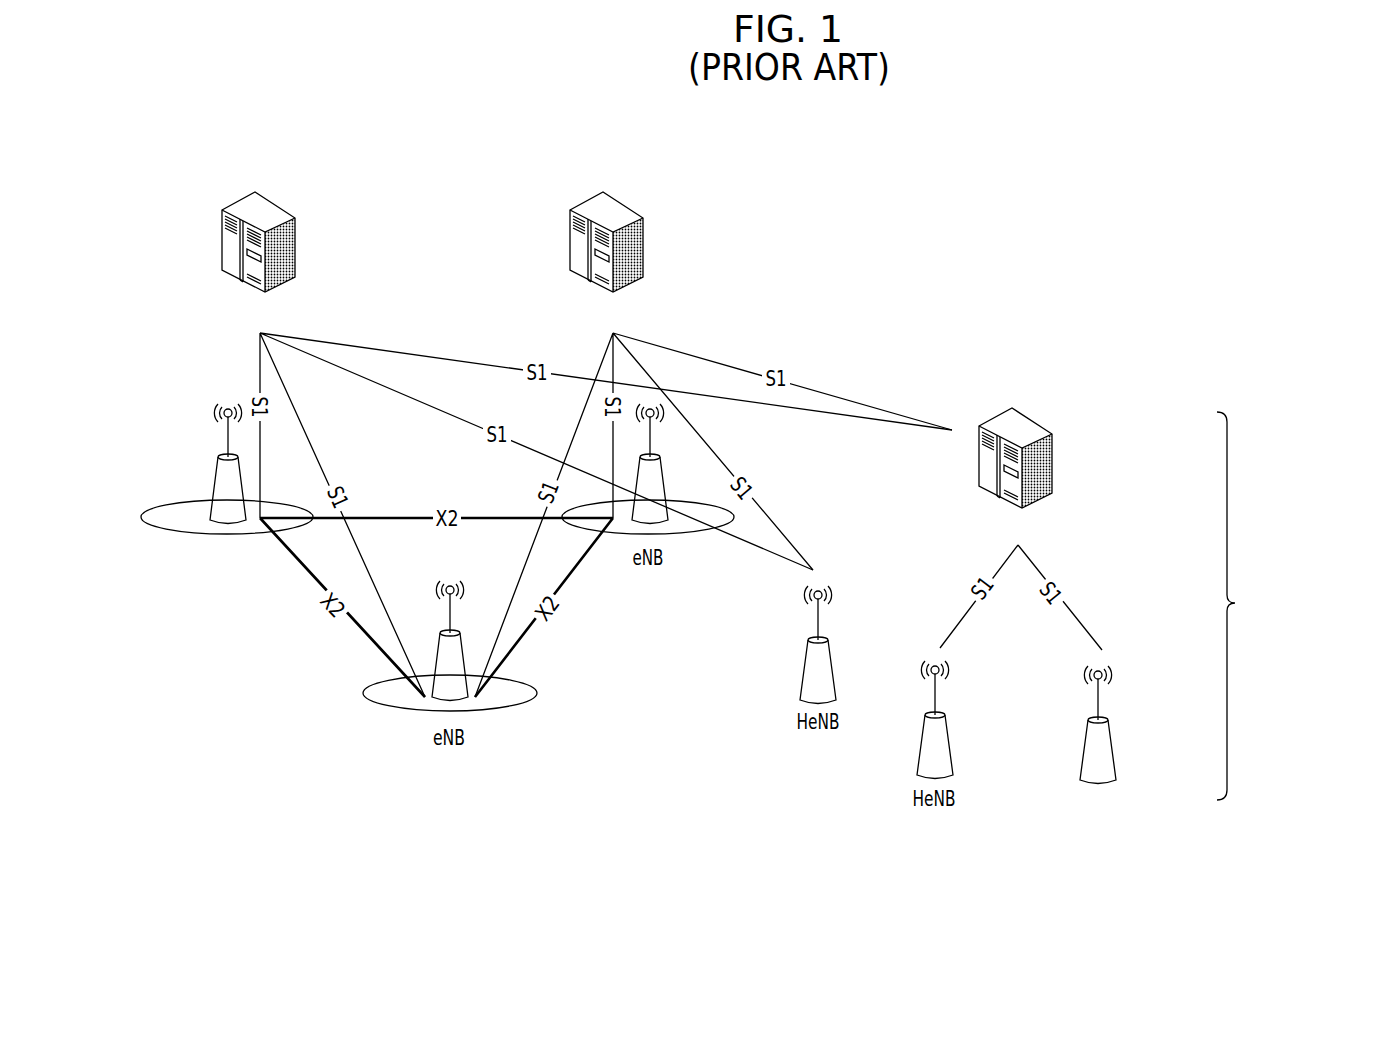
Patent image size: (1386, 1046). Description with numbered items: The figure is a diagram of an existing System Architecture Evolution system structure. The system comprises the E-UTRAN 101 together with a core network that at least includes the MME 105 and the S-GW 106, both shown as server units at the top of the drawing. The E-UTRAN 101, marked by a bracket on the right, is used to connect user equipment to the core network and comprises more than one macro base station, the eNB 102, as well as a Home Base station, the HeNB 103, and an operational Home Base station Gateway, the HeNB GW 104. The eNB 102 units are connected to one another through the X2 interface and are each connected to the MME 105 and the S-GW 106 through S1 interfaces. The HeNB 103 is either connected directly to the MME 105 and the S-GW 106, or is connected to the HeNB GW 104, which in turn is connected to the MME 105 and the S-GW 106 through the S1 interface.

The E-UTRAN 101 is at (1320, 606).
The macro base station (eNB) 102 is at (212, 486).
The Home Base station (HeNB) 103 is at (1113, 752).
The Home Base station Gateway (HeNB GW) 104 is at (1053, 471).
The Mobile Management Entity (MME) 105 is at (644, 253).
The Signaling Gateway (S-GW) 106 is at (295, 247).